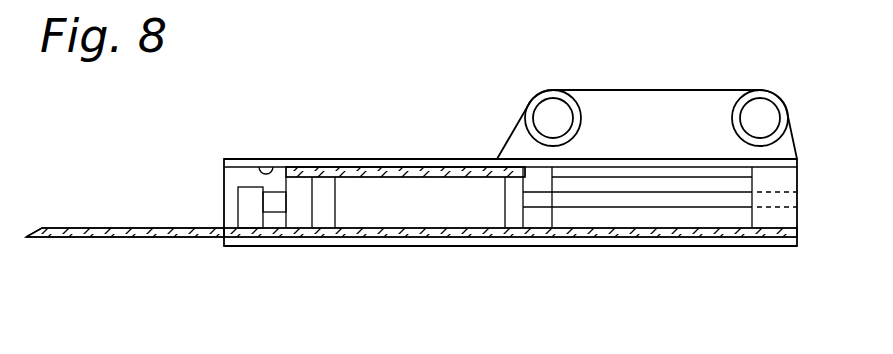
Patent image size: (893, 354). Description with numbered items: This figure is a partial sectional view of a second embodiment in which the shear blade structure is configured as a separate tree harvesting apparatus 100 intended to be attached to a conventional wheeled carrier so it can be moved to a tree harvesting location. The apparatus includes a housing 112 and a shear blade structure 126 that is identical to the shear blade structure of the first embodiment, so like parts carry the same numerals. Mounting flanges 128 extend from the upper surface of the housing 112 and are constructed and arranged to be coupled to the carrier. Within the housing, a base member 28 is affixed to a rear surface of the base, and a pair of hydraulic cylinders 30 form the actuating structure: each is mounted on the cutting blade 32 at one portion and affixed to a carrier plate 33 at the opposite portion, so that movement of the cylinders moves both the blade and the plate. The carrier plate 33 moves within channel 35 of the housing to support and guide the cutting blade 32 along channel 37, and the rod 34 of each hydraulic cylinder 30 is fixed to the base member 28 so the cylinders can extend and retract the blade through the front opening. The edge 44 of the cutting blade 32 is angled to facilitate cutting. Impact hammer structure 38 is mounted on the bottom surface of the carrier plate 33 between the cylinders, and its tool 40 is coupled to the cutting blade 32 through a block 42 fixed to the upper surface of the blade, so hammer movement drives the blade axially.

The tree harvesting apparatus 100 is at (388, 138).
The housing 112 is at (240, 164).
The carrier plate 33 is at (449, 166).
The channel 35 is at (271, 166).
The block 42 is at (240, 197).
The tool 40 is at (272, 211).
The shear blade structure 126 is at (309, 239).
The hydraulic cylinder 30 is at (435, 209).
The impact hammer structure 38 is at (535, 179).
The rod 34 is at (688, 200).
The base member 28 is at (772, 227).
The channel 37 is at (600, 233).
The cutting blade 32 is at (511, 240).
The edge 44 is at (30, 240).
The mounting flanges 128 is at (708, 100).